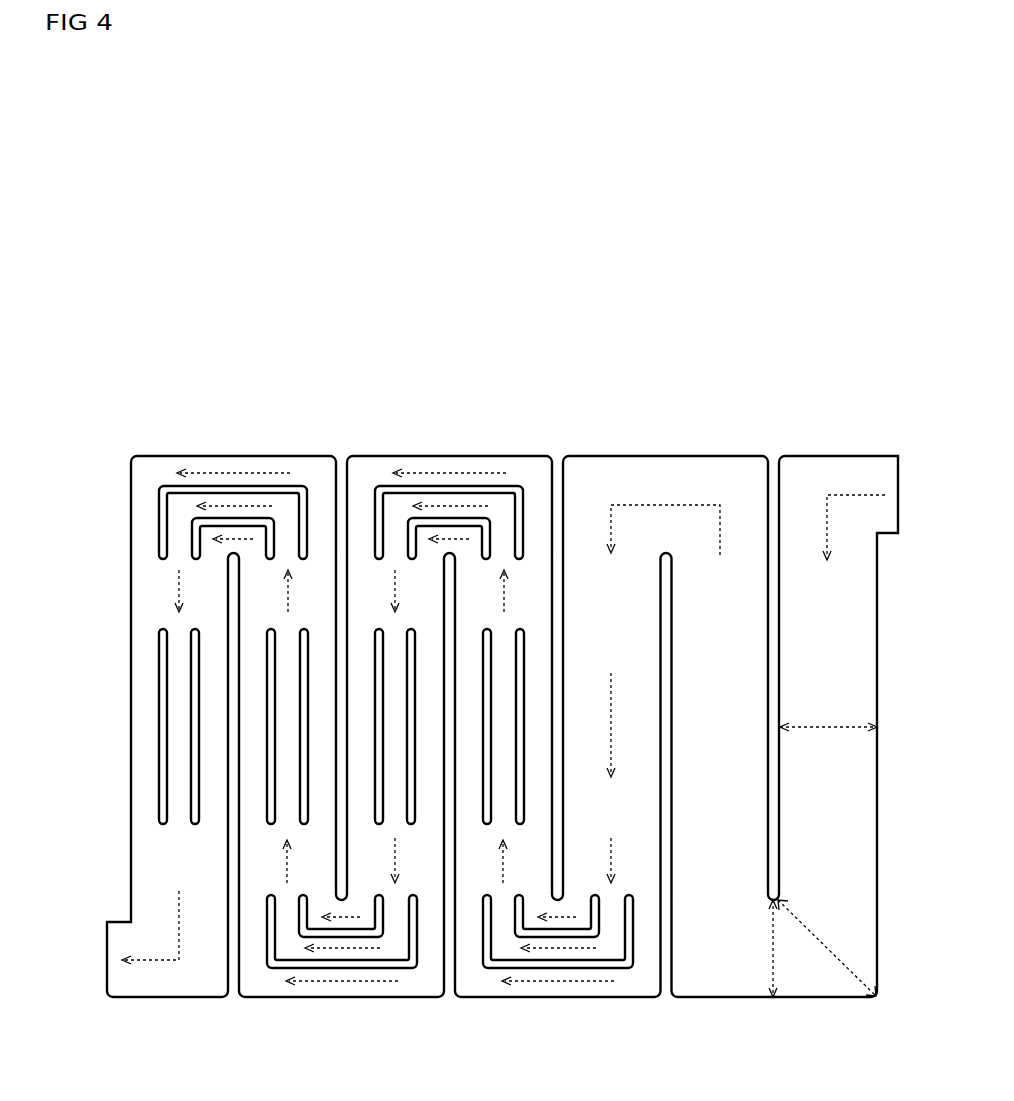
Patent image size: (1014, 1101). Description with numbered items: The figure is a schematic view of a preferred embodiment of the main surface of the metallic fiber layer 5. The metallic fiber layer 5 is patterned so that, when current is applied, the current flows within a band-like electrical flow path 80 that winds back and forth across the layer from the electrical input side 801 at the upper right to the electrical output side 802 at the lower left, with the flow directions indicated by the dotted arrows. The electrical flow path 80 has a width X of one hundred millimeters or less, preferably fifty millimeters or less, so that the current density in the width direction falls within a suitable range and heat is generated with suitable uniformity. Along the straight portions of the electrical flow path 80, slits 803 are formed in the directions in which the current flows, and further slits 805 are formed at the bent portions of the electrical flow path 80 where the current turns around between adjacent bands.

The metallic fiber layer 5 is at (862, 408).
The electrical flow path 80 is at (674, 456).
The electrical input side 801 is at (893, 513).
The electrical output side 802 is at (110, 937).
The slits 803 is at (158, 683).
The slits 805 is at (170, 486).